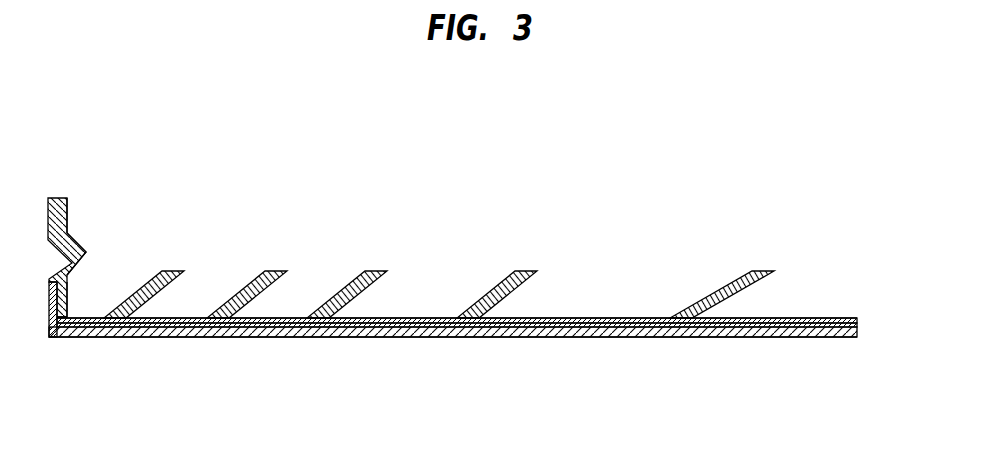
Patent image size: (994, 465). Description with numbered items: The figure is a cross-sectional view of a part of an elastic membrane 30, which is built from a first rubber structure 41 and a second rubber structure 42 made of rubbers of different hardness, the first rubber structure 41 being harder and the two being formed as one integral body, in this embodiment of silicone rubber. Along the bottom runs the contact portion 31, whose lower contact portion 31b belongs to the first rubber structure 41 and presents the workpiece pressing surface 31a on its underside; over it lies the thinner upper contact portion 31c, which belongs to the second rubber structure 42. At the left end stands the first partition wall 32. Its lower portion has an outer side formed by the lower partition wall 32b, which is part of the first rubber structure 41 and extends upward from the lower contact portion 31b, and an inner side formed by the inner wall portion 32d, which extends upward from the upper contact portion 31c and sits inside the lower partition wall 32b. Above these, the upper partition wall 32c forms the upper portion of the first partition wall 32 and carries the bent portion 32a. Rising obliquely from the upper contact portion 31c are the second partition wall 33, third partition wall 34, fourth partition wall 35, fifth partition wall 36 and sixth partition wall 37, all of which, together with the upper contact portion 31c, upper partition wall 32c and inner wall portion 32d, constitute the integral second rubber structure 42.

The elastic membrane 30 is at (482, 267).
The contact portion 31 is at (497, 340).
The workpiece pressing surface 31a is at (758, 337).
The lower contact portion 31b is at (810, 337).
The upper contact portion 31c is at (787, 318).
The first partition wall 32 is at (94, 263).
The bent portion 32a is at (83, 250).
The lower partition wall 32b is at (50, 297).
The upper partition wall 32c is at (67, 215).
The inner wall portion 32d is at (67, 312).
The second partition wall 33 is at (172, 270).
The third partition wall 34 is at (275, 270).
The fourth partition wall 35 is at (375, 270).
The fifth partition wall 36 is at (522, 270).
The sixth partition wall 37 is at (760, 270).
The first rubber structure 41 is at (550, 338).
The second rubber structure 42 is at (565, 318).